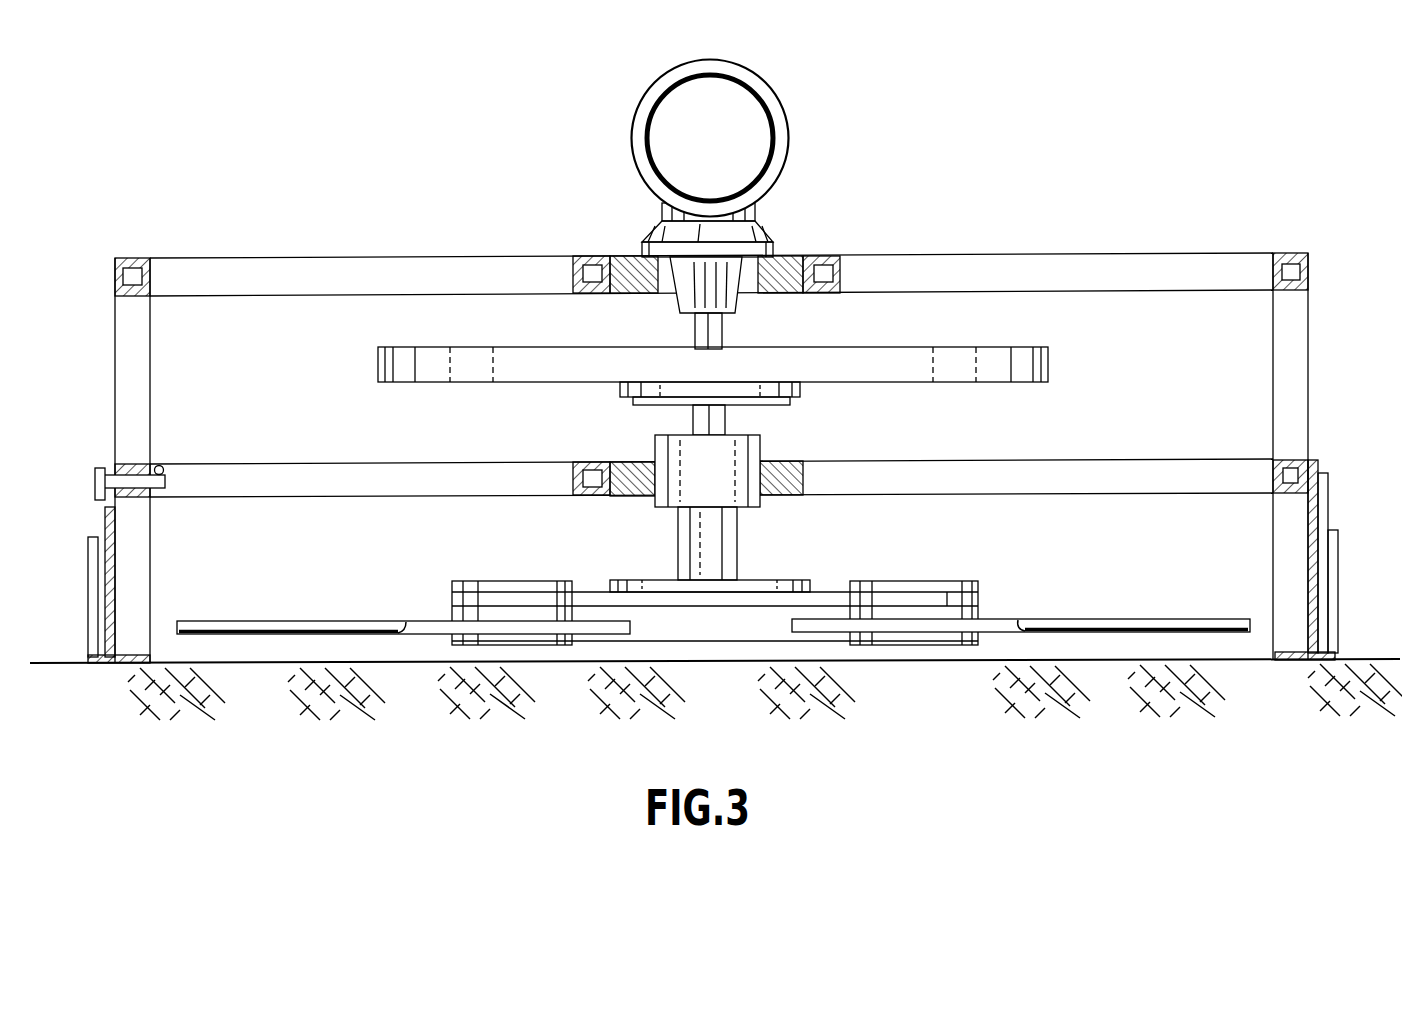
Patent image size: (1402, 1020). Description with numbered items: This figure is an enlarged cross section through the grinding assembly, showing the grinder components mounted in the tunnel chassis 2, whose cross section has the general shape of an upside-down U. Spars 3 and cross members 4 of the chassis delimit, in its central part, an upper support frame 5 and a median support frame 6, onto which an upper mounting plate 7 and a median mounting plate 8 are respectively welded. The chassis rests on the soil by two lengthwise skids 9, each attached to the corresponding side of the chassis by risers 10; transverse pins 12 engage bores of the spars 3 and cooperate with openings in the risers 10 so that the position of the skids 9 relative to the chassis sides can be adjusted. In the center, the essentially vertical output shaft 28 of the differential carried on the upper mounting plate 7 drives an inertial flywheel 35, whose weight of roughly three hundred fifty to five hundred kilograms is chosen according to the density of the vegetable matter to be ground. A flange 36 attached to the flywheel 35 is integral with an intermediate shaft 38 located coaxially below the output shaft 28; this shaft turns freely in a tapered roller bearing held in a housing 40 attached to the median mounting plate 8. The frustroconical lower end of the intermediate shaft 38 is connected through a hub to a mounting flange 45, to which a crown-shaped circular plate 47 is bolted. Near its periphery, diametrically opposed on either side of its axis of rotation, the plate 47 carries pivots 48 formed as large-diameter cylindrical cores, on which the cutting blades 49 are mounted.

The tunnel chassis 2 is at (1250, 222).
The spars 3 is at (150, 277).
The cross members 4 is at (345, 263).
The upper support frame 5 is at (815, 262).
The median support frame 6 is at (830, 436).
The upper mounting plate 7 is at (780, 292).
The median mounting plate 8 is at (780, 478).
The lengthwise skids 9 is at (125, 663).
The risers 10 is at (110, 553).
The transverse pins 12 is at (102, 477).
The output shaft 28 is at (706, 333).
The inertial flywheel 35 is at (390, 370).
The flange 36 is at (636, 405).
The intermediate shaft 38 is at (702, 426).
The housing 40 is at (746, 457).
The mounting flange 45 is at (768, 582).
The crown-shaped circular plate 47 is at (695, 594).
The pivots 48 is at (917, 645).
The cutting blades 49 is at (1145, 618).